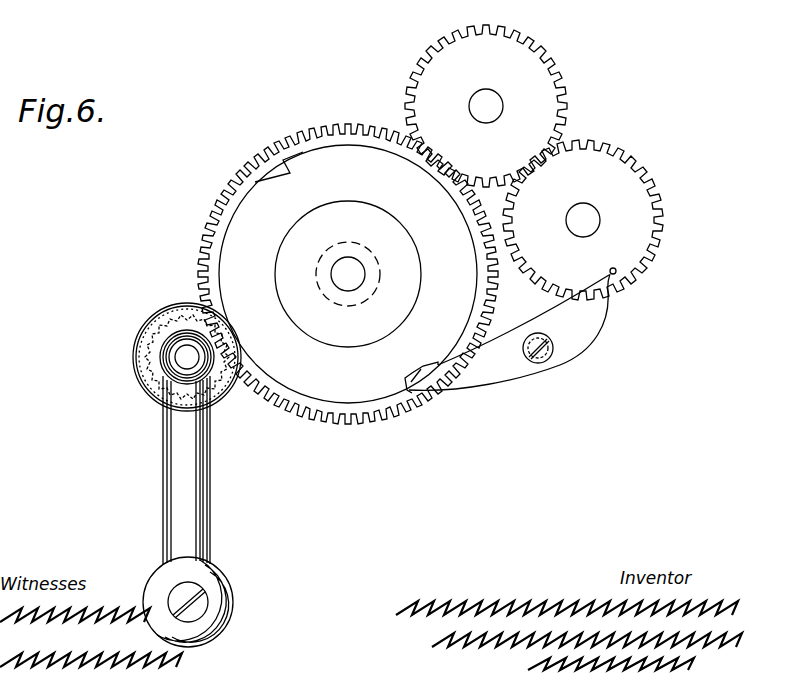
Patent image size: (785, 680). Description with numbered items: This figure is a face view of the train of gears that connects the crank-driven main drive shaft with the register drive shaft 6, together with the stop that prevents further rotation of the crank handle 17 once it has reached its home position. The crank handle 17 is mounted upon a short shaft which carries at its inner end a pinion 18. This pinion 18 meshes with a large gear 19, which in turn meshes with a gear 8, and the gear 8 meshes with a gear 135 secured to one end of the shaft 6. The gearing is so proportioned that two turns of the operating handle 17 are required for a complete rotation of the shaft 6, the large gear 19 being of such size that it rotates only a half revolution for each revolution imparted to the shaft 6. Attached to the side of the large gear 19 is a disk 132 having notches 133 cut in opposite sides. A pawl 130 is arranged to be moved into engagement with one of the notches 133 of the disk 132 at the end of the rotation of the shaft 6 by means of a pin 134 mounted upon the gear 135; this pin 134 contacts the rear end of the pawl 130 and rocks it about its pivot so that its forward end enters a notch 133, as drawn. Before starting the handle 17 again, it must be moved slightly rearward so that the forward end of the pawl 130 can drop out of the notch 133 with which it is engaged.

The large gear 19 is at (372, 136).
The disk 132 is at (328, 373).
The gear 8 is at (535, 87).
The gear 135 is at (593, 166).
The register drive shaft 6 is at (585, 220).
The pin 134 is at (616, 273).
The pawl 130 is at (563, 350).
The notches 133 is at (292, 172).
The pinion 18 is at (182, 313).
The crank handle 17 is at (180, 472).